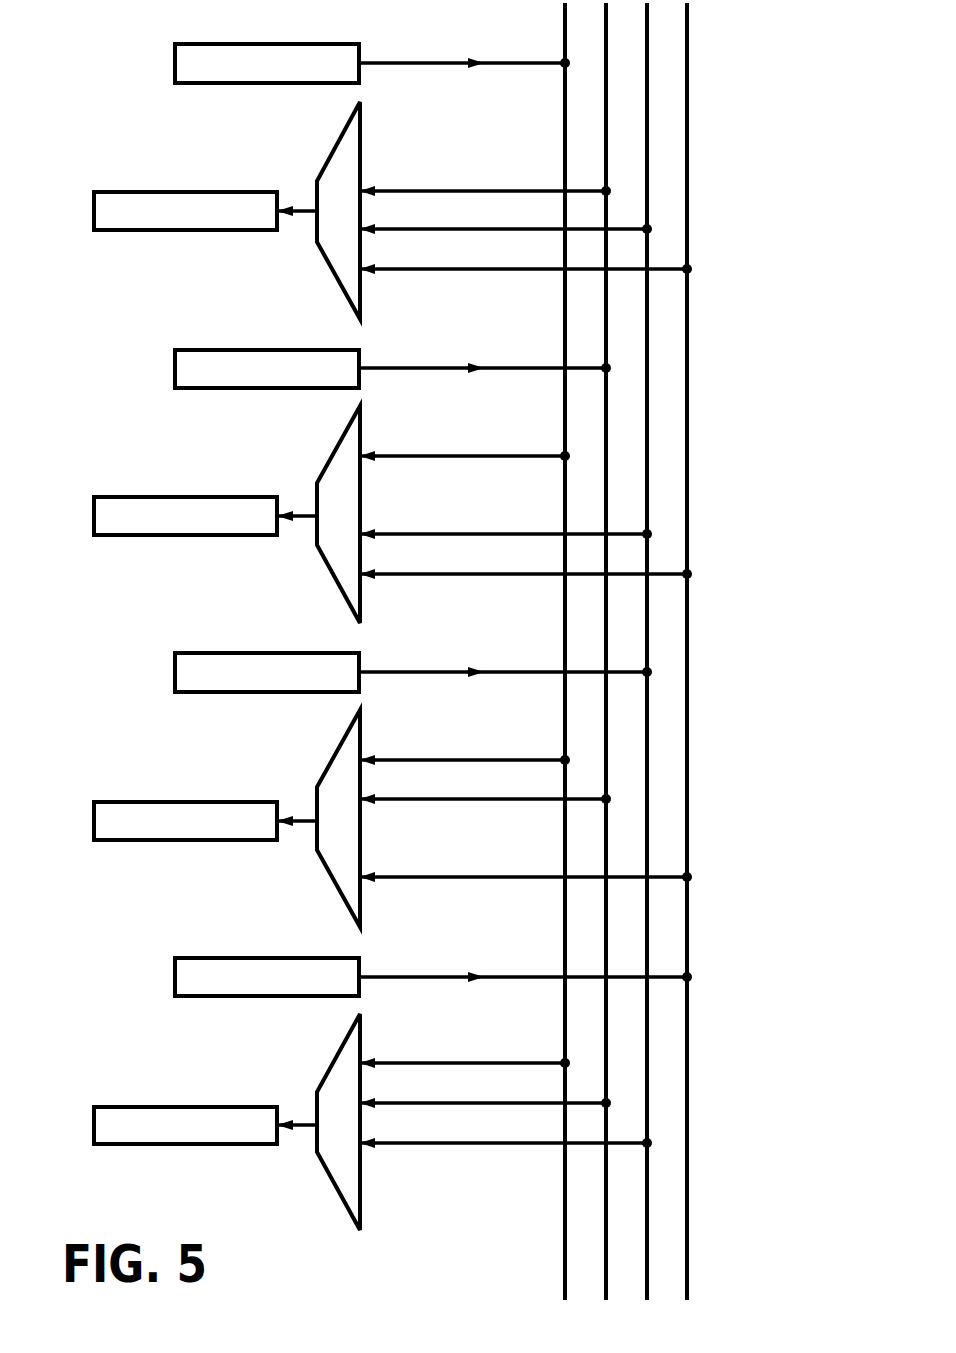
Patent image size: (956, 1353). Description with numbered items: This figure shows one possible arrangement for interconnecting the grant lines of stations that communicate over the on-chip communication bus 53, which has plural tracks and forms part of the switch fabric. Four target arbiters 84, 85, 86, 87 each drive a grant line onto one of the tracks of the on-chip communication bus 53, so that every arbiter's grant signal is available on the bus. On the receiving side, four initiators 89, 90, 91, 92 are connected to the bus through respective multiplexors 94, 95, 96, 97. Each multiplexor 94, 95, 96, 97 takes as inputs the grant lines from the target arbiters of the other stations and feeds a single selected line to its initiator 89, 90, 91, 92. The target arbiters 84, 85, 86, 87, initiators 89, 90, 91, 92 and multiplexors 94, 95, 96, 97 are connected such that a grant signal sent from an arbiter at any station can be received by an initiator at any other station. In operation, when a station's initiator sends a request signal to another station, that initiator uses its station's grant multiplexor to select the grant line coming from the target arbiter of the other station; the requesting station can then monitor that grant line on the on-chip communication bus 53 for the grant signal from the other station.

The on-chip communication bus 53 is at (742, 126).
The target arbiter 84 is at (247, 44).
The target arbiter 85 is at (247, 350).
The target arbiter 86 is at (247, 653).
The target arbiter 87 is at (247, 958).
The initiator 89 is at (165, 192).
The initiator 90 is at (165, 497).
The initiator 91 is at (165, 802).
The initiator 92 is at (165, 1107).
The multiplexor 94 is at (332, 151).
The multiplexor 95 is at (332, 455).
The multiplexor 96 is at (332, 759).
The multiplexor 97 is at (332, 1064).